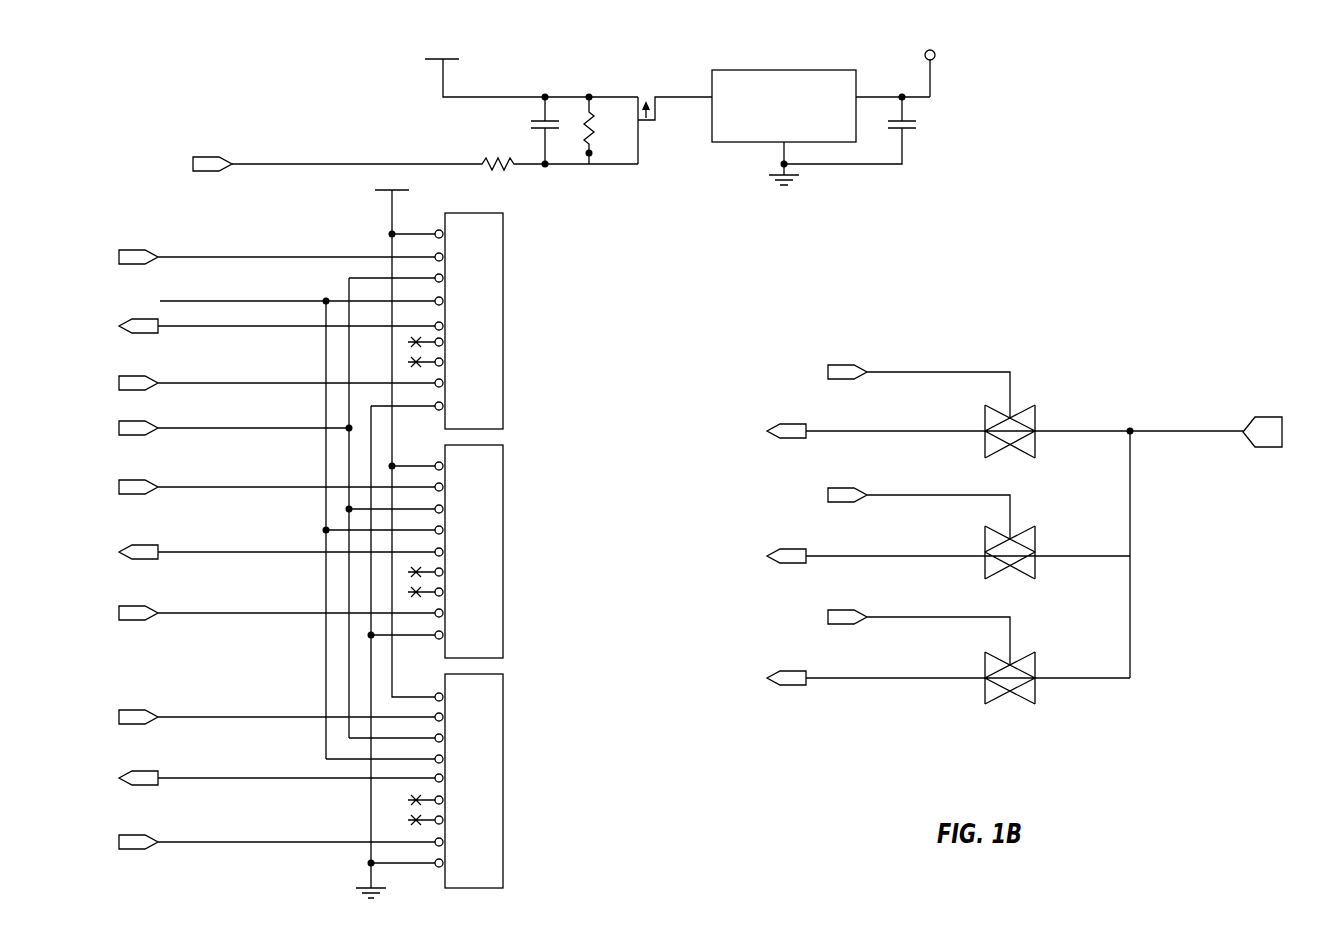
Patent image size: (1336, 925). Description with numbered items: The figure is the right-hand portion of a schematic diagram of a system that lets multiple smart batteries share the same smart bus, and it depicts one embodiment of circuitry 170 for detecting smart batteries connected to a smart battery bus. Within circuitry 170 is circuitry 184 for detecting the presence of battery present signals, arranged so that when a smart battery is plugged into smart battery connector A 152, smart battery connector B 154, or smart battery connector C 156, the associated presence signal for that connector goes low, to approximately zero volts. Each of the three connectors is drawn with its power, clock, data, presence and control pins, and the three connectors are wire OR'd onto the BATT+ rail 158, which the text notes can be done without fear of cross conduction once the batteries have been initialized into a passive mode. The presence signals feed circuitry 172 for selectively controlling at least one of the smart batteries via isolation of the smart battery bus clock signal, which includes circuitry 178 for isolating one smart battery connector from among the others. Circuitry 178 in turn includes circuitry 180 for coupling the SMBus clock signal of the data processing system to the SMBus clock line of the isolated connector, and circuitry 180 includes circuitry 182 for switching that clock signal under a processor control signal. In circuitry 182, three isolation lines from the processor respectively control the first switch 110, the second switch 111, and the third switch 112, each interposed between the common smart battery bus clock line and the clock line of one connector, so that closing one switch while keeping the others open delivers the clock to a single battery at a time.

The switch SW1 110 is at (1020, 418).
The switch SW2 111 is at (1020, 549).
The switch SW3 112 is at (1020, 675).
The smart battery connector A 152 is at (515, 325).
The smart battery connector B 154 is at (515, 550).
The smart battery connector C 156 is at (515, 784).
The BATT+ rail 158 is at (393, 213).
The circuitry for detecting smart batteries connected to a smart battery bus 170 is at (630, 842).
The circuitry for selectively controlling at least one of the at least two smart bat 172 is at (1237, 250).
The circuitry for isolating a smart battery connector from among at least two smart 178 is at (1173, 303).
The circuitry for switching the SMBus clock signal of the data processing system to 182 is at (1103, 353).
The circuitry for coupling an SMBus clock signal of the data processing system to th 180 is at (1067, 248).
The circuitry for detecting the presence of battery present signals on at least two 184 is at (248, 870).